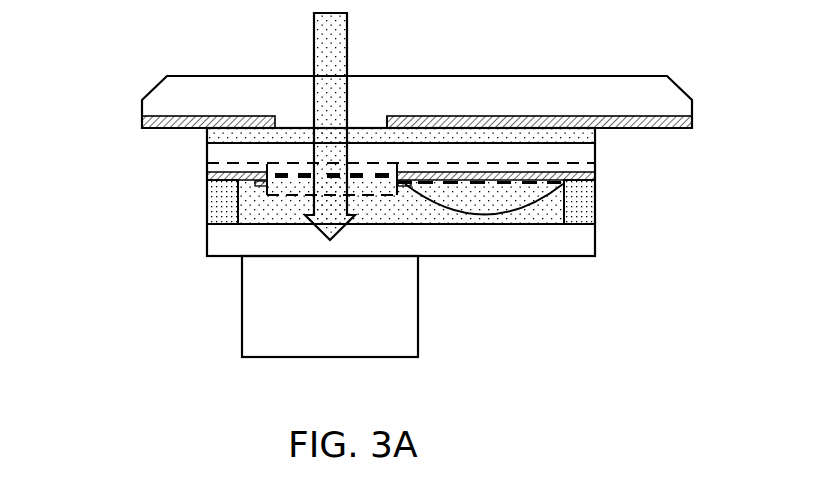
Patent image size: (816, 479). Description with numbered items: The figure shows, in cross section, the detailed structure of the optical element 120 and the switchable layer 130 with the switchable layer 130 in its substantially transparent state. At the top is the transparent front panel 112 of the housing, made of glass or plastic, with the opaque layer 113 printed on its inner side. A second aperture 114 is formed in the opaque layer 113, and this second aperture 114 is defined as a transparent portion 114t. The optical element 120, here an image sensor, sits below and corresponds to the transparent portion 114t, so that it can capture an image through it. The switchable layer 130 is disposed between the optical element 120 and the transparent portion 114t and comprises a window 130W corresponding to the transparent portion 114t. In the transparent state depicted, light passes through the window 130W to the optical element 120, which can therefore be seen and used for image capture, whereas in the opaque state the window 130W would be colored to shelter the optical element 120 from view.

The front panel 112 is at (176, 88).
The opaque layer 113 is at (142, 122).
The second aperture 114 is at (283, 126).
The transparent portion 114t is at (376, 126).
The switchable layer 130 is at (205, 204).
The window 130W is at (207, 163).
The optical element 120 is at (250, 307).